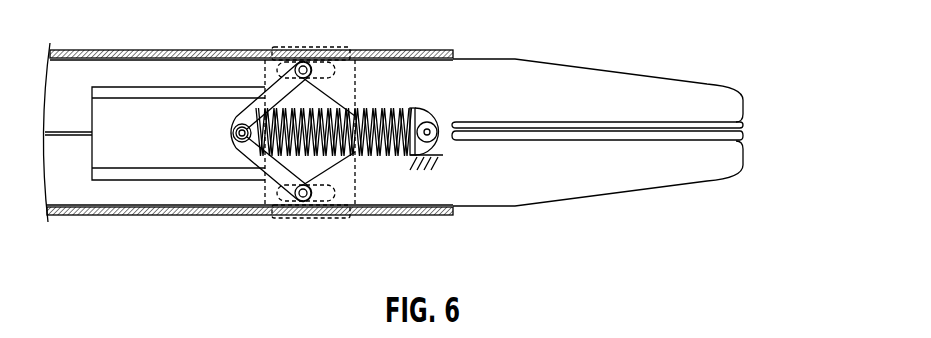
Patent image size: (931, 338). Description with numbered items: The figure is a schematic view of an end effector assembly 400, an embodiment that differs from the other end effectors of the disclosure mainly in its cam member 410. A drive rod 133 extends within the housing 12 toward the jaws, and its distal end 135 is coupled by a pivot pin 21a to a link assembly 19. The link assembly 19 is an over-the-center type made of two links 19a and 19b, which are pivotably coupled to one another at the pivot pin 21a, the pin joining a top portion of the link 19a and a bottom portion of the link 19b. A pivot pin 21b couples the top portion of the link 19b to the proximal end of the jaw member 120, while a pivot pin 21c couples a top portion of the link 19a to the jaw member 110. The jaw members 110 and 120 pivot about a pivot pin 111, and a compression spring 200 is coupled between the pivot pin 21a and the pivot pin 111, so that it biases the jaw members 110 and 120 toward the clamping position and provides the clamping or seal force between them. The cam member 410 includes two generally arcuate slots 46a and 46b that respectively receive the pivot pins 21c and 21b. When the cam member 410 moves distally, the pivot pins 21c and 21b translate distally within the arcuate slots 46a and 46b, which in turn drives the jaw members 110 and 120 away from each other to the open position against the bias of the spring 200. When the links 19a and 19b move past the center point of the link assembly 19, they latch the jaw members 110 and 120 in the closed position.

The housing 12 is at (182, 50).
The link assembly 19 is at (228, 114).
The link 19a is at (278, 168).
The link 19b is at (278, 95).
The pivot pin 21a is at (233, 132).
The pivot pin 21b is at (285, 68).
The pivot pin 21c is at (277, 196).
The arcuate slot 46a is at (321, 210).
The arcuate slot 46b is at (322, 55).
The jaw member 110 is at (743, 158).
The pivot pin 111 is at (428, 122).
The jaw member 120 is at (743, 108).
The drive rod 133 is at (73, 136).
The distal end 135 is at (137, 84).
The compression spring 200 is at (372, 94).
The end effector assembly 400 is at (674, 49).
The cam member 410 is at (330, 47).